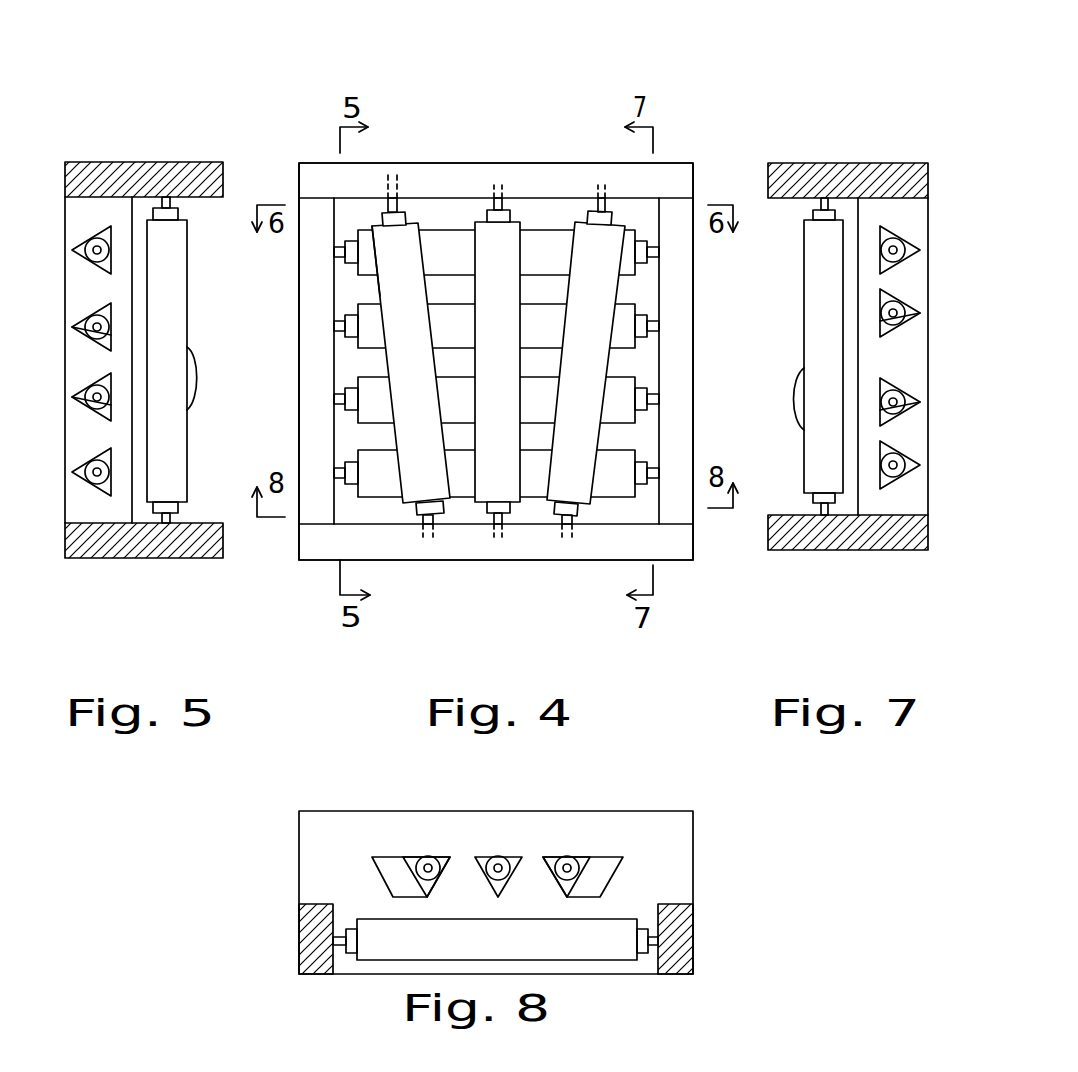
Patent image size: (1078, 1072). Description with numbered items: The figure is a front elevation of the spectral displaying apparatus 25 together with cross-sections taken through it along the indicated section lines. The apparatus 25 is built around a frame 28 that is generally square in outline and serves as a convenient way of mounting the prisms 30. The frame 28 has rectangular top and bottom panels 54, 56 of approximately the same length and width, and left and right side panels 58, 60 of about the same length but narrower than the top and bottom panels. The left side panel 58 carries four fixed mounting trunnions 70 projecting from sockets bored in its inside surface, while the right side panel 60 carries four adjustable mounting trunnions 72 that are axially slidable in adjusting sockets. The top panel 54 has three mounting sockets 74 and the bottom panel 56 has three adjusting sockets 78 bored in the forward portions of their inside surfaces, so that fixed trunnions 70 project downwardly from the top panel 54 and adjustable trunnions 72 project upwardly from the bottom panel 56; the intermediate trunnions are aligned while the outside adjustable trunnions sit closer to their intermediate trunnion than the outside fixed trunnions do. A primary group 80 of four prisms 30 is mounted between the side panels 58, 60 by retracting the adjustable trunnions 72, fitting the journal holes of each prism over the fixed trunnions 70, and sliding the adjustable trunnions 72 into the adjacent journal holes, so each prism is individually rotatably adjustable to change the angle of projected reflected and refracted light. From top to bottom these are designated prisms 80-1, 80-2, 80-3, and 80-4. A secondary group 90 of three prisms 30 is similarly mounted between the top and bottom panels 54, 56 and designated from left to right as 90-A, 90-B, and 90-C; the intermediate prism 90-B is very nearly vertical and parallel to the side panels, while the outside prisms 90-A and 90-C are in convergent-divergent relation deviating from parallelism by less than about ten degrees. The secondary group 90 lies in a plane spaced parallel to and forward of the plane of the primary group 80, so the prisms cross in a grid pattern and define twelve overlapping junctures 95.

In FIG. 4, the spectral displaying apparatus 25 is at (665, 573).
In FIG. 4, the frame 28 is at (385, 162).
In FIG. 4, the prism 30 is at (637, 385).
In FIG. 5, the prism 30 is at (108, 453).
In FIG. 7, the prism 30 is at (882, 452).
In FIG. 8, the prism 30 is at (570, 857).
In FIG. 4, the top panel 54 is at (320, 163).
In FIG. 7, the top panel 54 is at (903, 163).
In FIG. 8, the top panel 54 is at (658, 857).
In FIG. 4, the bottom panel 56 is at (373, 560).
In FIG. 7, the bottom panel 56 is at (838, 550).
In FIG. 4, the left side panel 58 is at (696, 225).
In FIG. 5, the left side panel 58 is at (120, 342).
In FIG. 8, the left side panel 58 is at (693, 923).
In FIG. 4, the right side panel 60 is at (299, 487).
In FIG. 7, the right side panel 60 is at (868, 290).
In FIG. 8, the right side panel 60 is at (299, 940).
In FIG. 4, the fixed mounting trunnion 70 is at (652, 405).
In FIG. 5, the fixed mounting trunnion 70 is at (173, 203).
In FIG. 7, the fixed mounting trunnion 70 is at (820, 200).
In FIG. 8, the fixed mounting trunnion 70 is at (650, 947).
In FIG. 4, the adjustable mounting trunnion 72 is at (336, 325).
In FIG. 7, the adjustable mounting trunnion 72 is at (880, 307).
In FIG. 8, the adjustable mounting trunnion 72 is at (343, 945).
In FIG. 4, the mounting socket 74 is at (400, 165).
In FIG. 8, the mounting socket 74 is at (428, 857).
In FIG. 4, the adjusting socket 78 is at (413, 540).
In FIG. 8, the primary group of prisms 80 is at (617, 910).
In FIG. 4, the first primary prism 80-1 is at (548, 243).
In FIG. 4, the second primary prism 80-2 is at (462, 317).
In FIG. 4, the third primary prism 80-3 is at (623, 413).
In FIG. 4, the fourth primary prism 80-4 is at (607, 480).
In FIG. 8, the secondary group of prisms 90 is at (367, 864).
In FIG. 4, the first secondary prism 90-A is at (607, 257).
In FIG. 4, the second secondary prism 90-B is at (487, 263).
In FIG. 4, the third secondary prism 90-C is at (412, 255).
In FIG. 4, the overlapping juncture 95 is at (368, 279).